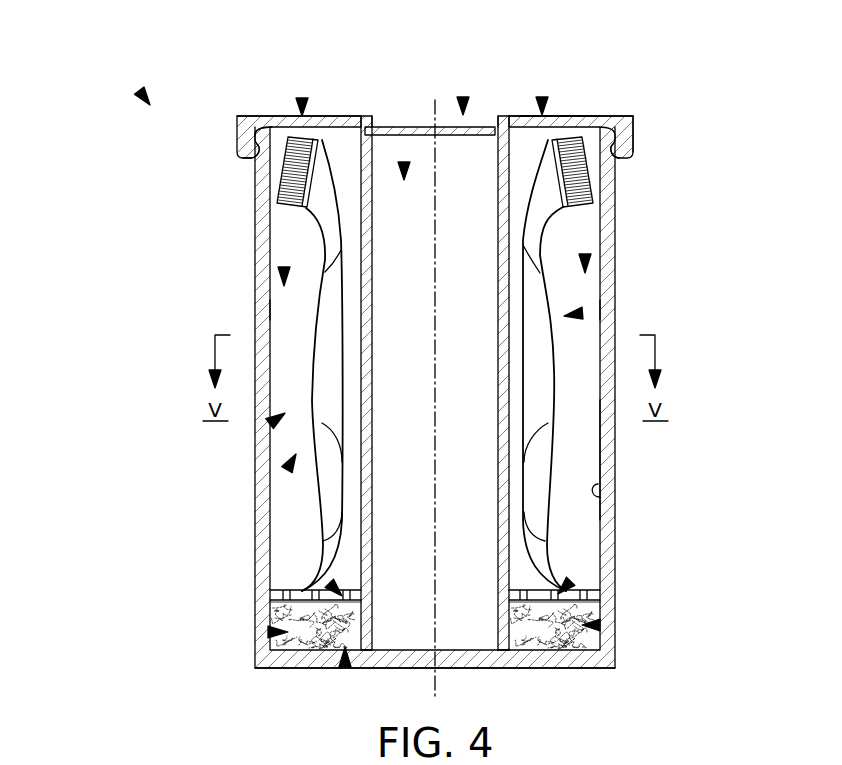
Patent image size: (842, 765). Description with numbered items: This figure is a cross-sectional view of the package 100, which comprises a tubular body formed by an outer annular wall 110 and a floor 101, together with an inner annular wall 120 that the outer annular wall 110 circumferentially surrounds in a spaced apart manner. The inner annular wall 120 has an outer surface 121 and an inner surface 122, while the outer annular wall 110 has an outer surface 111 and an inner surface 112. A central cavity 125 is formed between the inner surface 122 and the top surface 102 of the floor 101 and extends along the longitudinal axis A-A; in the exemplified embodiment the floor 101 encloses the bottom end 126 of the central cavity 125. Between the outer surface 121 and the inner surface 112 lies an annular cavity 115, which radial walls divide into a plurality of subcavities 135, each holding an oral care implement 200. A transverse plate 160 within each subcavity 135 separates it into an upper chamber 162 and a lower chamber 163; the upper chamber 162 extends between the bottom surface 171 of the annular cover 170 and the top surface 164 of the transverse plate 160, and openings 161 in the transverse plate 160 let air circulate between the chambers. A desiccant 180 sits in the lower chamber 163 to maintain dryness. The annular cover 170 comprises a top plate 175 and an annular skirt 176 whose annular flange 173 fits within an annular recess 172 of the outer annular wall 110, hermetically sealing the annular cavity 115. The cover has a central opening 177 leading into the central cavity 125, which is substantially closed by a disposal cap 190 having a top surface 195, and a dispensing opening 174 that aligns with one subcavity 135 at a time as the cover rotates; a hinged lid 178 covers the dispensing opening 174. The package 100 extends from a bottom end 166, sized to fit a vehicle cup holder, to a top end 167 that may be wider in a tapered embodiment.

The package 100 is at (140, 92).
The floor 101 is at (580, 663).
The top surface of the floor 102 is at (480, 655).
The outer annular wall 110 is at (613, 268).
The outer surface of the outer annular wall 111 is at (617, 452).
The inner surface of the outer annular wall 112 is at (600, 497).
The annular cavity 115 is at (283, 267).
The inner annular wall 120 is at (364, 312).
The outer surface of the inner annular wall 121 is at (555, 134).
The inner surface of the inner annular wall 122 is at (542, 97).
The central cavity 125 is at (401, 162).
The bottom end of the central cavity 126 is at (377, 652).
The subcavity 135 is at (286, 470).
The transverse plate 160 is at (297, 597).
The opening 161 is at (327, 583).
The upper chamber 162 is at (272, 420).
The lower chamber 163 is at (268, 632).
The top surface of the transverse plate 164 is at (597, 590).
The bottom end of the package 166 is at (340, 667).
The top end of the package 167 is at (548, 116).
The annular cover 170 is at (608, 122).
The bottom surface of the annular cover 171 is at (602, 125).
The annular recess 172 is at (255, 138).
The annular flange 173 is at (618, 167).
The dispensing opening 174 is at (301, 99).
The top plate 175 is at (260, 116).
The annular skirt 176 is at (245, 158).
The central opening 177 is at (463, 97).
The lid 178 is at (366, 80).
The desiccant 180 is at (313, 628).
The disposal cap 190 is at (362, 116).
The top surface of the disposal cap 195 is at (408, 116).
The oral care implement 200 is at (310, 206).